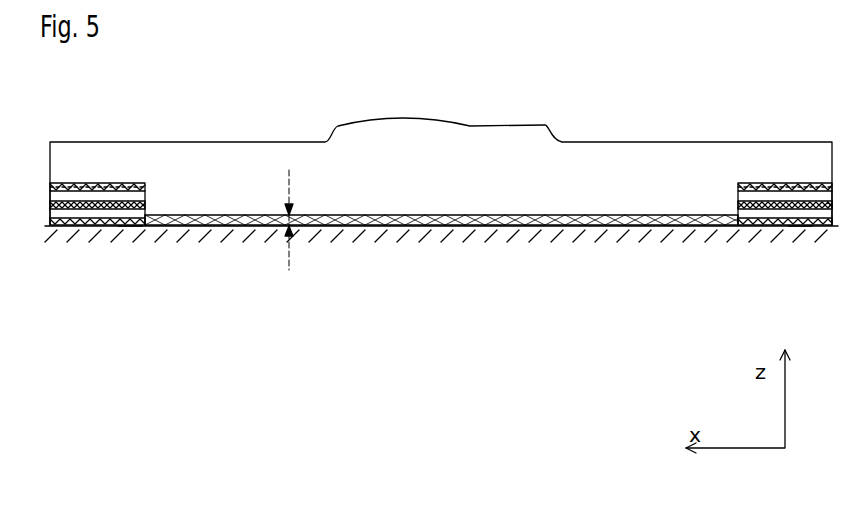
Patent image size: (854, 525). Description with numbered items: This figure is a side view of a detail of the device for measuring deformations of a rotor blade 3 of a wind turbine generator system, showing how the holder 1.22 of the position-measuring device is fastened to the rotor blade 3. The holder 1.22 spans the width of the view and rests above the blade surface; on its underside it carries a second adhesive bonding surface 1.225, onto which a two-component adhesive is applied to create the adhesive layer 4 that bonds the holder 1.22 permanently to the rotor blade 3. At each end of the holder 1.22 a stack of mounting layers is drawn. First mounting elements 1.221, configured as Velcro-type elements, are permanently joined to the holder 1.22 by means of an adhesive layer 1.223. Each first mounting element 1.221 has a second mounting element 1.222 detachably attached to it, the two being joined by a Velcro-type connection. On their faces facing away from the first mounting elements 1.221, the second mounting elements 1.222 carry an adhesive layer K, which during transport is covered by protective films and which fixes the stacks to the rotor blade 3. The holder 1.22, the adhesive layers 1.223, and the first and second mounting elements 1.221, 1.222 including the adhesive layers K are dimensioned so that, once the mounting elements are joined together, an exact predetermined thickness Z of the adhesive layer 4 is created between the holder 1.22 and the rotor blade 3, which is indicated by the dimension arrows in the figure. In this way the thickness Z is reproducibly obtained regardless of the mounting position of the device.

The holder 1.22 is at (470, 152).
The first mounting element 1.221 is at (61, 195).
The adhesive layer 1.223 is at (134, 195).
The second mounting element 1.222 is at (82, 215).
The adhesive layer K is at (130, 228).
The second adhesive bonding surface 1.225 is at (377, 227).
The adhesive layer 4 is at (465, 227).
The rotor blade 3 is at (445, 265).
The thickness Z is at (297, 220).